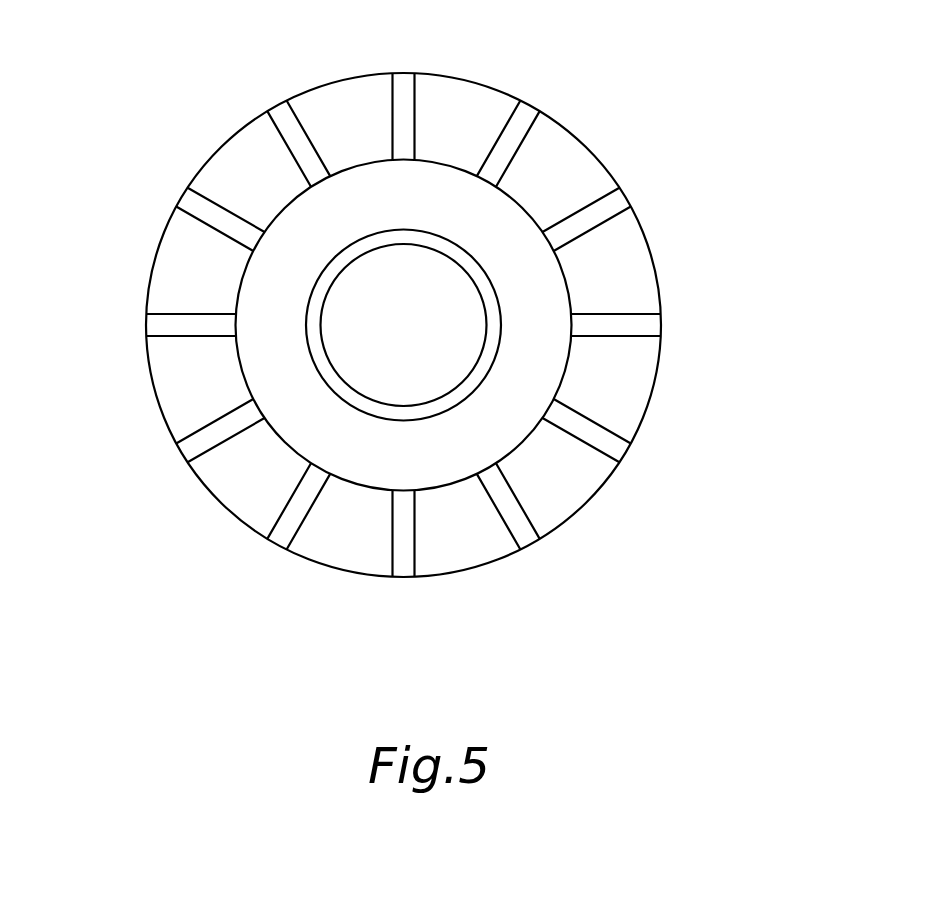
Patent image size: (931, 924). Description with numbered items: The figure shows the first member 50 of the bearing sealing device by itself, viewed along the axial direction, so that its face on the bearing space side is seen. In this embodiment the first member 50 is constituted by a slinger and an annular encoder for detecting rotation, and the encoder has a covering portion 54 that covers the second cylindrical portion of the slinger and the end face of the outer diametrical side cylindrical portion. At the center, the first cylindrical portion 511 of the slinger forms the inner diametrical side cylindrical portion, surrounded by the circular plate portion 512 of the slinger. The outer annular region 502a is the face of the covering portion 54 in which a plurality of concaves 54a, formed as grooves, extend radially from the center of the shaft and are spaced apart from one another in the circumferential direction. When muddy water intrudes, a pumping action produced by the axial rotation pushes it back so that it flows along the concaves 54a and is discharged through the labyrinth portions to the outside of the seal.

The first member 50 is at (188, 533).
The covering portion 54 is at (702, 178).
The concaves 54a is at (280, 115).
The outer peripheral portion 502a is at (338, 95).
The first cylindrical portion 511 is at (437, 243).
The circular plate portion 512 is at (320, 252).